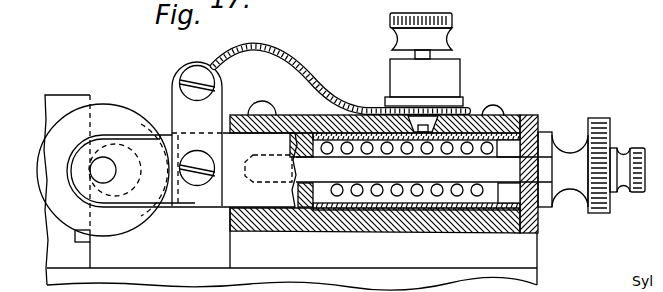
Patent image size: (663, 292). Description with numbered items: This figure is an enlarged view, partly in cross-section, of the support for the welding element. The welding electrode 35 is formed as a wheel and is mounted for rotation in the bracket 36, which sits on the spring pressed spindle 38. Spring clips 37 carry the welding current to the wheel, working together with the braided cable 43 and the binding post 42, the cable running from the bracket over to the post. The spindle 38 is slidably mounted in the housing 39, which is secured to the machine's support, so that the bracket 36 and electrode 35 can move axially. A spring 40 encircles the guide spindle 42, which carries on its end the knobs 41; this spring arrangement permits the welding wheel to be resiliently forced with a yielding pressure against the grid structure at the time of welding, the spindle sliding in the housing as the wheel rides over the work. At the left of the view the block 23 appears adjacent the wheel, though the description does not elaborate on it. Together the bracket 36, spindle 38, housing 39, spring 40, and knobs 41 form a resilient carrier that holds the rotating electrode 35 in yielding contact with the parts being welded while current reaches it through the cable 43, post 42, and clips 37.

The support block 23 is at (69, 100).
The welding electrode 35 is at (121, 117).
The bracket 36 is at (177, 208).
The spring clips 37 is at (128, 170).
The spring pressed spindle 38 is at (260, 170).
The housing 39 is at (472, 113).
The spring 40 is at (523, 135).
The knobs 41 is at (641, 142).
The binding post 42 is at (443, 72).
The braided cable 43 is at (345, 90).